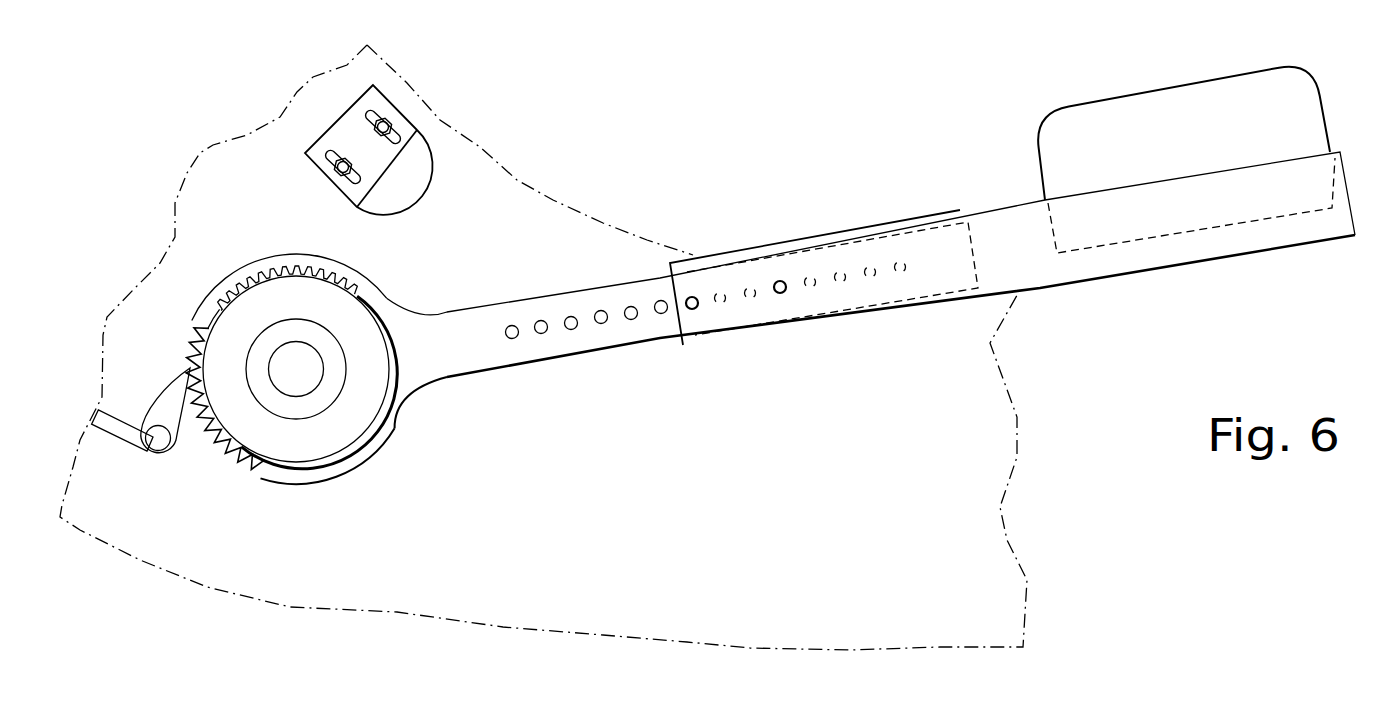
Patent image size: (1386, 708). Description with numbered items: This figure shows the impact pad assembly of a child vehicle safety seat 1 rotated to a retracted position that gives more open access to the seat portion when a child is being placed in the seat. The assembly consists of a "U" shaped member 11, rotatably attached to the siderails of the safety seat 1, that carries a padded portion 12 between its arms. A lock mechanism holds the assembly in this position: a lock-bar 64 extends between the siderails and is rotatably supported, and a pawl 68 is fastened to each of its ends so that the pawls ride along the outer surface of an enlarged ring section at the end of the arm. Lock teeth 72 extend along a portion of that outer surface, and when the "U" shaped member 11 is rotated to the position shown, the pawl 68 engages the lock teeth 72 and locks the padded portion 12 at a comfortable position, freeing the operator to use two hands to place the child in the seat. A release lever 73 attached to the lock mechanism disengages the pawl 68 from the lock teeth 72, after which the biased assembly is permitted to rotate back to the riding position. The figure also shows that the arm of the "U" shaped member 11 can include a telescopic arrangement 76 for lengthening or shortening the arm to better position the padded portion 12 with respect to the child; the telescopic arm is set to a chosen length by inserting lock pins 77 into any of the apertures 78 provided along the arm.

The vehicle safety seat 1 is at (988, 463).
The "U" shaped member 11 is at (1003, 192).
The padded portion 12 is at (1300, 96).
The lock-bar 64 is at (163, 441).
The pawl 68 is at (168, 398).
The lock teeth 72 is at (232, 465).
The release lever 73 is at (118, 428).
The telescopic arrangement 76 is at (862, 212).
The lock pins 77 is at (695, 306).
The apertures 78 is at (571, 330).